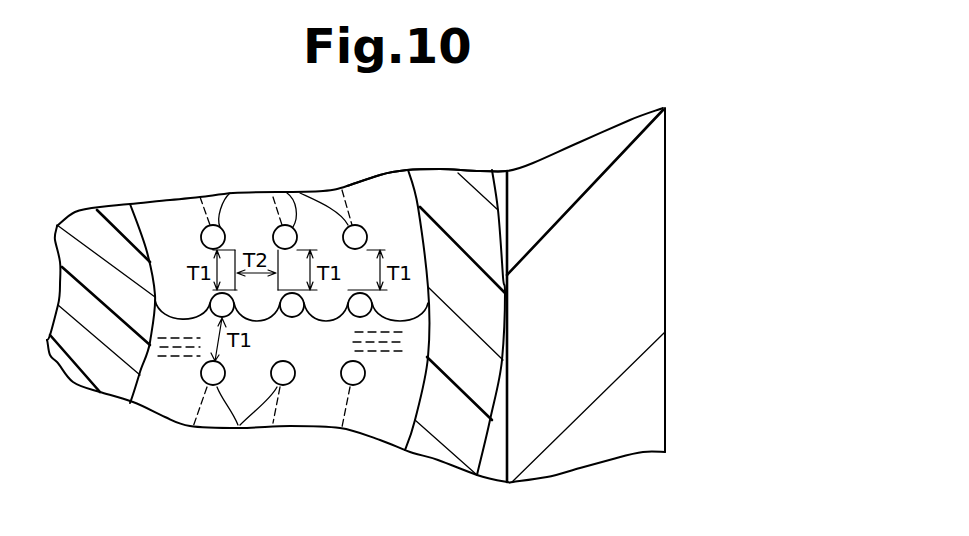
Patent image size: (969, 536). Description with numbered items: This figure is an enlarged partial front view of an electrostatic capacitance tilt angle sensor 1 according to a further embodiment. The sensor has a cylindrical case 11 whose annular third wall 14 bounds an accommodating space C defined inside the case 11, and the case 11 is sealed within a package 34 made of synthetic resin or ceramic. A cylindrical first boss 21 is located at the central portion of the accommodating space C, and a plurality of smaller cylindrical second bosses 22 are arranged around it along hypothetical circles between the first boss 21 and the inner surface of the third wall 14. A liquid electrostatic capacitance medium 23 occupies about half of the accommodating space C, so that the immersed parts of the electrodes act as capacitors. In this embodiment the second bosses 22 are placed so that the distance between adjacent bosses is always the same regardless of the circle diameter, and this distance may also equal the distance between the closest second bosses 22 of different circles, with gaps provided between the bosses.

The tilt angle sensor 1 is at (698, 168).
The case 11 is at (433, 165).
The third wall 14 is at (430, 450).
The first boss 21 is at (85, 355).
The second bosses 22 is at (300, 193).
The liquid electrostatic capacitance medium 23 is at (376, 432).
The package 34 is at (612, 447).
The accommodating space C is at (387, 203).